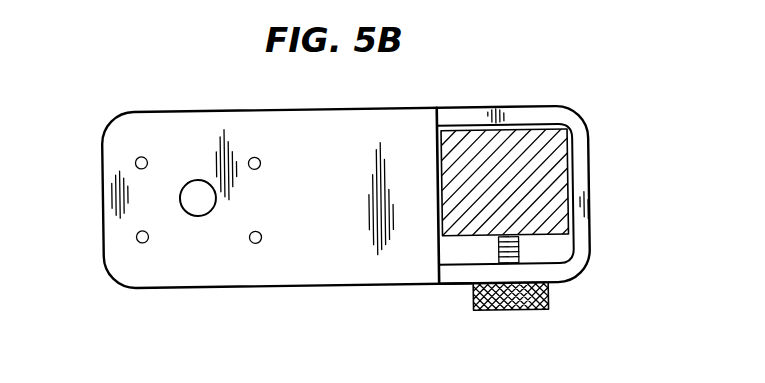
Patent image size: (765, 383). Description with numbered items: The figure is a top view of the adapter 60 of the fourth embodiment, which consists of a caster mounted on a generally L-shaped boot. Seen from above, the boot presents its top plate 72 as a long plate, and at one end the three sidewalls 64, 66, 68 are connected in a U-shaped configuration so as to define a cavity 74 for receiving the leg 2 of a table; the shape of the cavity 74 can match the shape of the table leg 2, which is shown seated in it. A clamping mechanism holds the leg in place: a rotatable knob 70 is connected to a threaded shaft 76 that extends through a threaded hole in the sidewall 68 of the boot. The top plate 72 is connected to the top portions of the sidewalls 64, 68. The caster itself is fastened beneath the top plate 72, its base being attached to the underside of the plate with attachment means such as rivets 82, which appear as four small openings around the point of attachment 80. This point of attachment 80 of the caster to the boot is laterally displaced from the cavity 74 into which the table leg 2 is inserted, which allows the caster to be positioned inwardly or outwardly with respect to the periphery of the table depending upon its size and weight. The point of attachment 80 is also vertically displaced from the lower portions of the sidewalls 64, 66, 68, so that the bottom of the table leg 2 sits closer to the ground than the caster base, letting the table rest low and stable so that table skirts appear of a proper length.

The adapter 60 is at (117, 290).
The leg 2 is at (568, 182).
The sidewall 64 is at (453, 107).
The sidewall 66 is at (595, 202).
The sidewall 68 is at (448, 287).
The rotatable knob 70 is at (532, 311).
The top plate 72 is at (285, 272).
The cavity 74 is at (452, 253).
The threaded shaft 76 is at (520, 247).
The point of attachment 80 is at (198, 179).
The rivets 82 is at (136, 161).